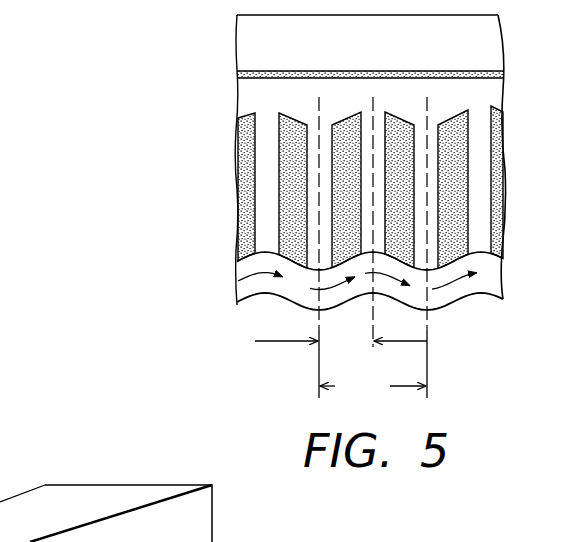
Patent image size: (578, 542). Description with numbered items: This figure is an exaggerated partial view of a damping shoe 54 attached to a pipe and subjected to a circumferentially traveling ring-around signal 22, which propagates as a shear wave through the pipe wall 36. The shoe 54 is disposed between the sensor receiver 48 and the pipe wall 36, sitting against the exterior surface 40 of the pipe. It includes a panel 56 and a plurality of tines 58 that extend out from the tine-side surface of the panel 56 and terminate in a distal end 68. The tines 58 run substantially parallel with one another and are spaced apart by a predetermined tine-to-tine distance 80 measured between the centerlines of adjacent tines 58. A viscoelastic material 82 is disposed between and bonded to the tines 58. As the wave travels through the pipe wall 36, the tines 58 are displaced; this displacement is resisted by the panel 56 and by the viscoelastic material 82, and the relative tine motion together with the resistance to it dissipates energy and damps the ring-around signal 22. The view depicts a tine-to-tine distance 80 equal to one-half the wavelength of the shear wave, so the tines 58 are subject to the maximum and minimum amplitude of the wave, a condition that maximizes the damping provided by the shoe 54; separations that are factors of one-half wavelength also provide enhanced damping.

The ring-around signal 22 is at (431, 288).
The pipe wall 36 is at (490, 288).
The exterior surface 40 is at (244, 257).
The sensor receiver 48 is at (234, 42).
The shoe 54 is at (210, 98).
The panel 56 is at (478, 106).
The tines 58 is at (267, 195).
The distal end 68 is at (262, 261).
The tine-to-tine distance 80 is at (290, 341).
The viscoelastic material 82 is at (458, 172).